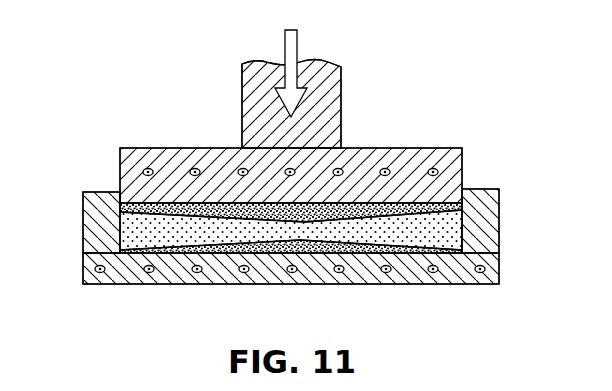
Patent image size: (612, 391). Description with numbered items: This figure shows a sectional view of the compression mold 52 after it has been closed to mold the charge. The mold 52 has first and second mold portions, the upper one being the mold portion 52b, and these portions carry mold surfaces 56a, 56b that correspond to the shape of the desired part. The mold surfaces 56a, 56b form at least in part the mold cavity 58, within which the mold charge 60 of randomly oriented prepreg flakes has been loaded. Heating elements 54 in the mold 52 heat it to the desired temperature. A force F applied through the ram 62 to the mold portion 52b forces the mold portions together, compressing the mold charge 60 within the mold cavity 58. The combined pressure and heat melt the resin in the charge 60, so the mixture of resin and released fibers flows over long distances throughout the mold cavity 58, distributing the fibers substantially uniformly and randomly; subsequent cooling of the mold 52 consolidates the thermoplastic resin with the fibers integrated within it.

The compression mold 52 is at (83, 232).
The second mold portion 52b is at (443, 156).
The heating elements 54 is at (149, 273).
The mold surface 56a is at (358, 245).
The mold surface 56b is at (225, 207).
The mold cavity 58 is at (447, 230).
The mold charge 60 is at (76, 221).
The ram 62 is at (327, 90).